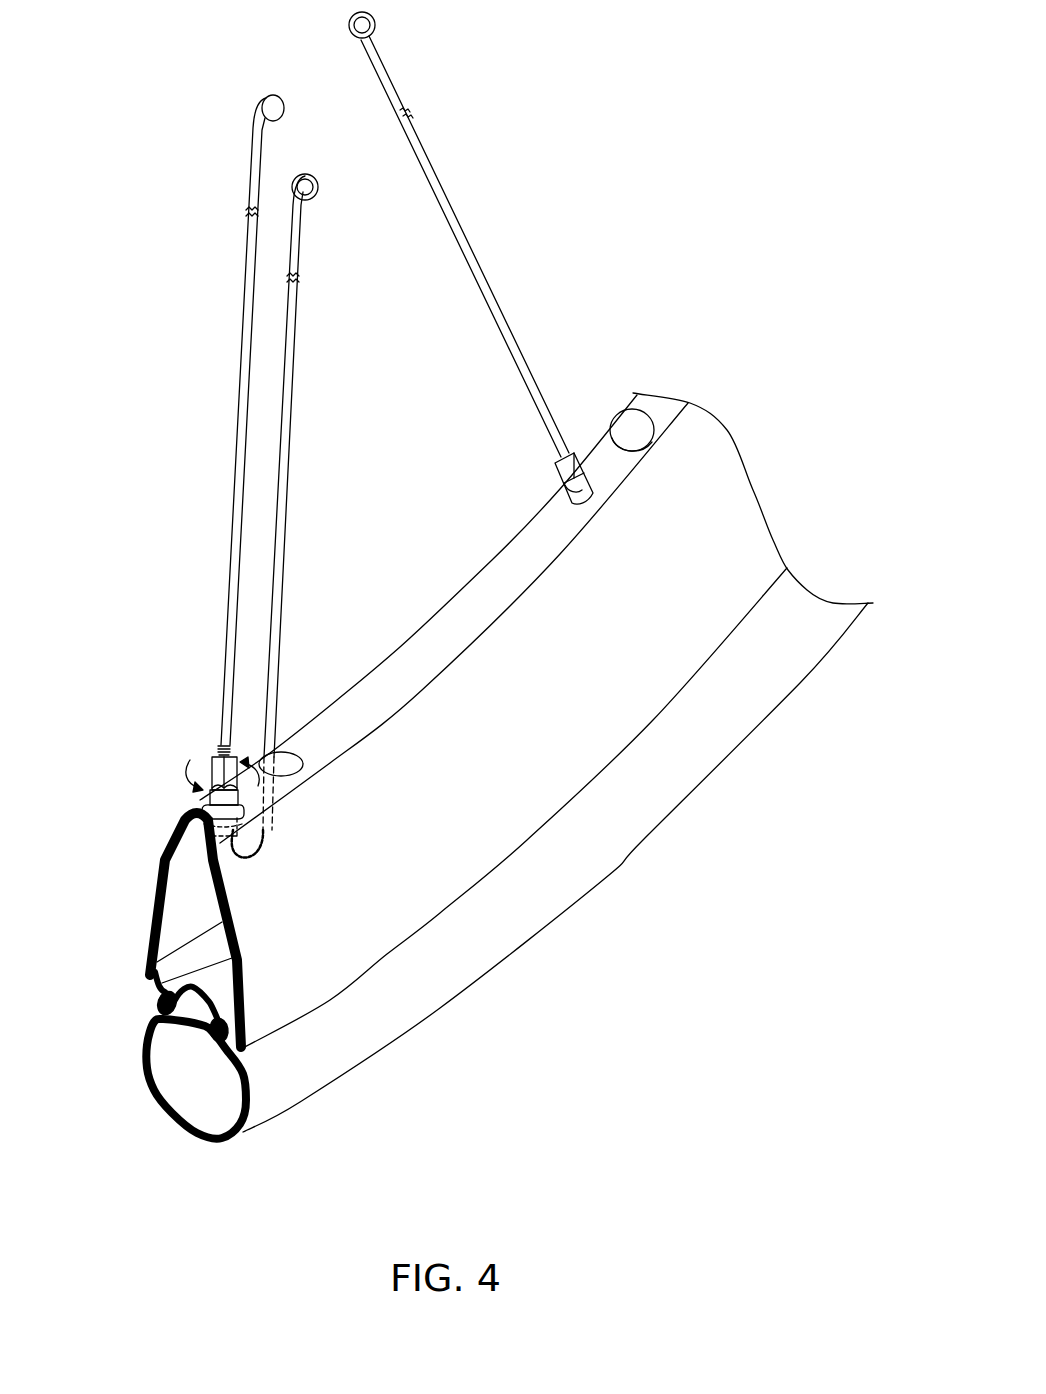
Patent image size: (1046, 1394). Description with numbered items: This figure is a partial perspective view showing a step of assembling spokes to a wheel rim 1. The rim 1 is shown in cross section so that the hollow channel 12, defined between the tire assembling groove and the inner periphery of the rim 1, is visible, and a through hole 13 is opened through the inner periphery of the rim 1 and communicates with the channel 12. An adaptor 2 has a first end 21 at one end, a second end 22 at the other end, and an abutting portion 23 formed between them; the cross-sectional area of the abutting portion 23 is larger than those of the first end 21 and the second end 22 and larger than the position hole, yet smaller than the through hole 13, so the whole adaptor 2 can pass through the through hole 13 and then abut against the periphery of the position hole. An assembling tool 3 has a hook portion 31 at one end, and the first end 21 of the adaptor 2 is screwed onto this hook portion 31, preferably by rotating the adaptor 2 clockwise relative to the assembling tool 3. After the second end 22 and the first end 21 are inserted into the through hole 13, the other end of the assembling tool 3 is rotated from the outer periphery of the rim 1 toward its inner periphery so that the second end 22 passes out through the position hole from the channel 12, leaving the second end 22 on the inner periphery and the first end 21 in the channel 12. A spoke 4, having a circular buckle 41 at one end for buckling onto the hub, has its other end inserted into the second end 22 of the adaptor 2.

The rim 1 is at (470, 870).
The channel 12 is at (178, 903).
The through hole 13 is at (290, 755).
The adaptor 2 is at (164, 733).
The first end 21 is at (198, 836).
The second end 22 is at (207, 766).
The abutting portion 23 is at (200, 800).
The assembling tool 3 is at (288, 517).
The hook portion 31 is at (205, 872).
The spoke 4 is at (205, 389).
The circular buckle 41 is at (262, 105).